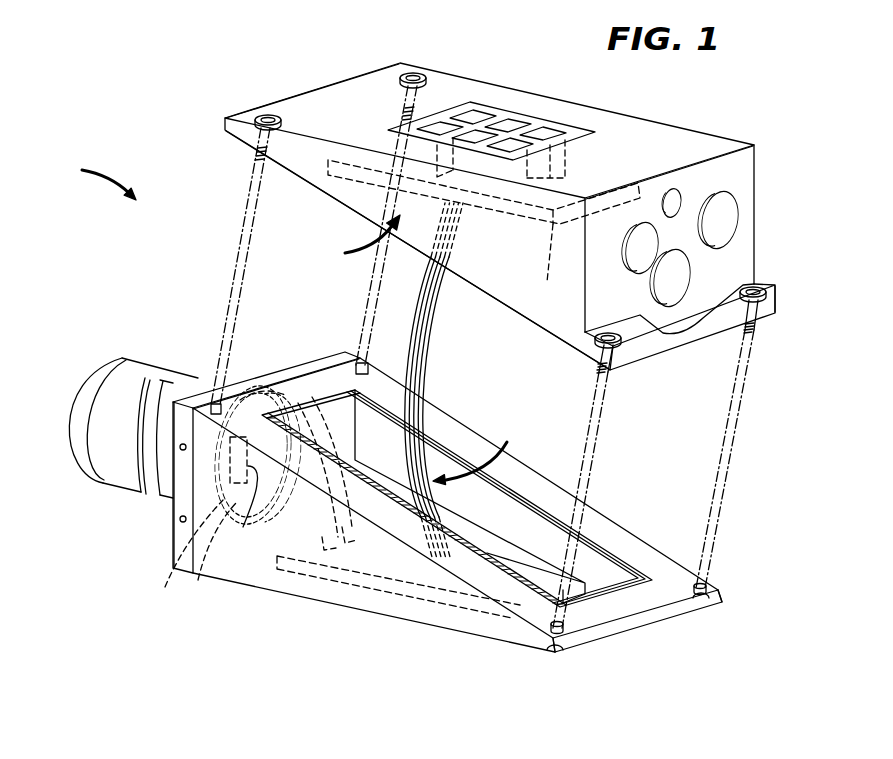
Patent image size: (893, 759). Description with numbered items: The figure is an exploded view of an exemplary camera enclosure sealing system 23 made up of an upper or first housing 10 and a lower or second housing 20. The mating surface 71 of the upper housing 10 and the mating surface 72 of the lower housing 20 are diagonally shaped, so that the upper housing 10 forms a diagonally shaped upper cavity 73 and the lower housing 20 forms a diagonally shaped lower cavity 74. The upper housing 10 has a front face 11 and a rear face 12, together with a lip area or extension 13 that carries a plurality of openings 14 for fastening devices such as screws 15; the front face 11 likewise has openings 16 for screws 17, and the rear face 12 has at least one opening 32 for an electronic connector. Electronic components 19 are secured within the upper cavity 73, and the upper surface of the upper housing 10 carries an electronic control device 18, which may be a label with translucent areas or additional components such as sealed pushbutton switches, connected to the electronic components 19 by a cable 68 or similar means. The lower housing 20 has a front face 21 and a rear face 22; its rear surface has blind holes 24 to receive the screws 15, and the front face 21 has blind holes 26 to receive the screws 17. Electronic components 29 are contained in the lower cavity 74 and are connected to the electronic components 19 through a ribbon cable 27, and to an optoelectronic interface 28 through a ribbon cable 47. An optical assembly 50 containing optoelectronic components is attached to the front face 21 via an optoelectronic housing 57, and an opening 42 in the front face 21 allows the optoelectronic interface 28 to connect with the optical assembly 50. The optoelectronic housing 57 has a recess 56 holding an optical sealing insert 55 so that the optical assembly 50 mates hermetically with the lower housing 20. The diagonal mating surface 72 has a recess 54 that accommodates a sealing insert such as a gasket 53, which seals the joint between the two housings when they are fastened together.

The upper housing 10 is at (544, 101).
The front face 11 is at (324, 92).
The rear face 12 is at (755, 167).
The extension 13 is at (762, 291).
The openings 14 is at (776, 297).
The screws 15 is at (606, 370).
The openings 16 is at (412, 72).
The screws 17 is at (258, 178).
The electronic control device 18 is at (446, 108).
The electronic components 19 is at (561, 266).
The lower housing 20 is at (413, 610).
The front face 21 is at (251, 378).
The rear face 22 is at (724, 603).
The camera enclosure sealing system 23 is at (94, 178).
The blind holes 24 is at (707, 586).
The blind holes 26 is at (363, 366).
The ribbon cable 27 is at (423, 385).
The optoelectronic interface 28 is at (243, 527).
The electronic components 29 is at (335, 582).
The opening 32 is at (745, 216).
The opening 42 is at (188, 572).
The ribbon cable 47 is at (303, 403).
The optical assembly 50 is at (88, 393).
The gasket 53 is at (617, 558).
The recess 54 is at (430, 534).
The optical sealing insert 55 is at (172, 515).
The recess 56 is at (205, 575).
The optoelectronic housing 57 is at (170, 462).
The cable 68 is at (410, 143).
The mating surface 71 is at (553, 332).
The mating surface 72 is at (536, 510).
The upper cavity 73 is at (359, 243).
The lower cavity 74 is at (481, 450).